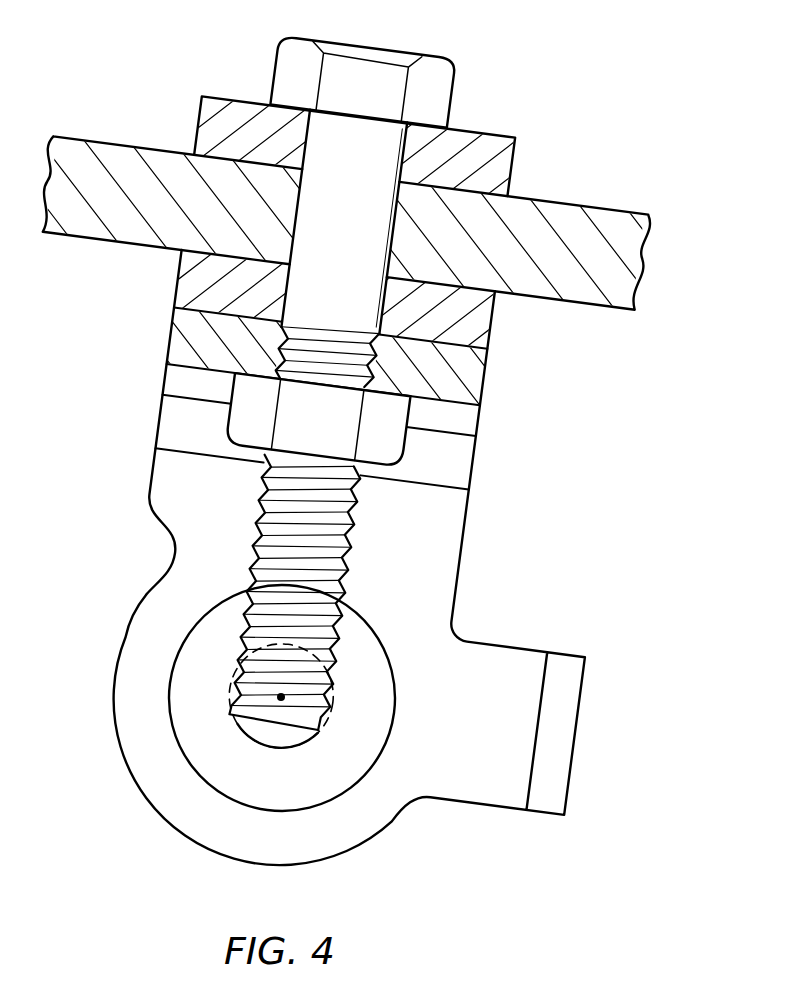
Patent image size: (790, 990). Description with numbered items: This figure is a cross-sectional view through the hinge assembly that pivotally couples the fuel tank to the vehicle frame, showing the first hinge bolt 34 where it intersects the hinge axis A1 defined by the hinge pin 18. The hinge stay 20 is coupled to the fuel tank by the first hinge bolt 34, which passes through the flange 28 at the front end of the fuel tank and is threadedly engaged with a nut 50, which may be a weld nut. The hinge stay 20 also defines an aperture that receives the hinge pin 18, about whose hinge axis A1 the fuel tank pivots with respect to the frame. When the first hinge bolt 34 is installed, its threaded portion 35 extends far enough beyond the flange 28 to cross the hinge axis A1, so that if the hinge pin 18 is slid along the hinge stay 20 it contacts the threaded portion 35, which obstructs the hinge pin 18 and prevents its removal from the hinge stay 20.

The first hinge bolt 34 is at (400, 49).
The flange 28 is at (607, 210).
The hinge stay 20 is at (483, 384).
The nut 50 is at (391, 462).
The threaded portion 35 is at (354, 562).
The hinge axis A1 is at (281, 700).
The hinge pin 18 is at (288, 747).